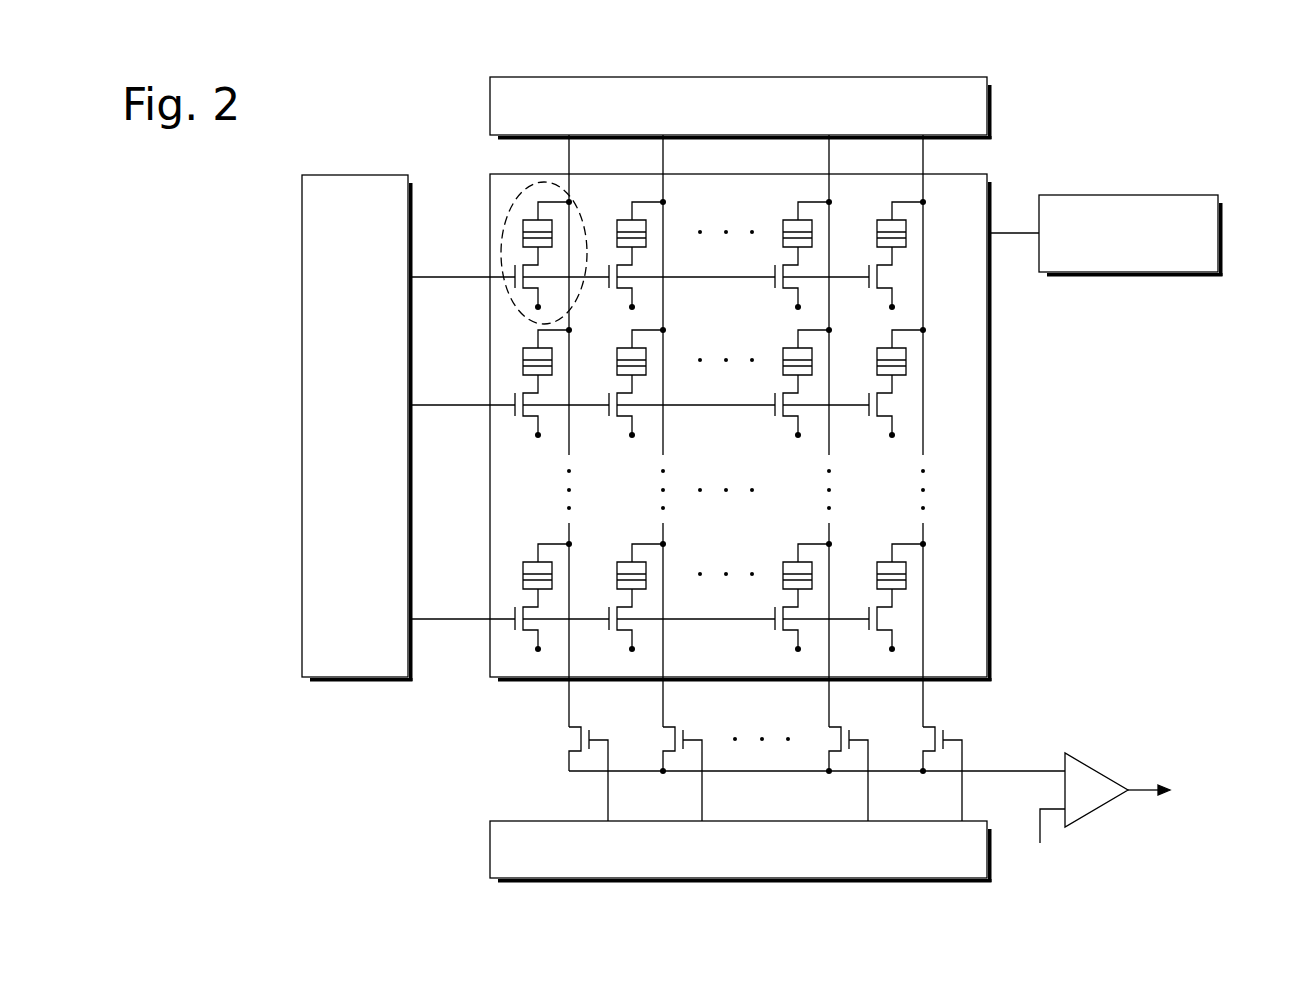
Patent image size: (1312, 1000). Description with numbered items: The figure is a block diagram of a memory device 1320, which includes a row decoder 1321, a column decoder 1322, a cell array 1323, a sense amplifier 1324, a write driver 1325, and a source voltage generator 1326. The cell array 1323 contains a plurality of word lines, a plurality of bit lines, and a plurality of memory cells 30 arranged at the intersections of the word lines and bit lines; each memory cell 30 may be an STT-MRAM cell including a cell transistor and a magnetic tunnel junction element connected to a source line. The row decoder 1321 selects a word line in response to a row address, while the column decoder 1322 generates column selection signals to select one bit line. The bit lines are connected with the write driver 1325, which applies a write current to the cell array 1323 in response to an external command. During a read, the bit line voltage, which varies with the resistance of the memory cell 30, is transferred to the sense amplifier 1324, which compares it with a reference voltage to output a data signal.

The memory device 1320 is at (1298, 82).
The row decoder 1321 is at (365, 175).
The column decoder 1322 is at (490, 851).
The cell array 1323 is at (990, 431).
The sense amplifier 1324 is at (1097, 770).
The write driver 1325 is at (990, 108).
The source voltage generator 1326 is at (1140, 195).
The memory cell 30 is at (497, 222).